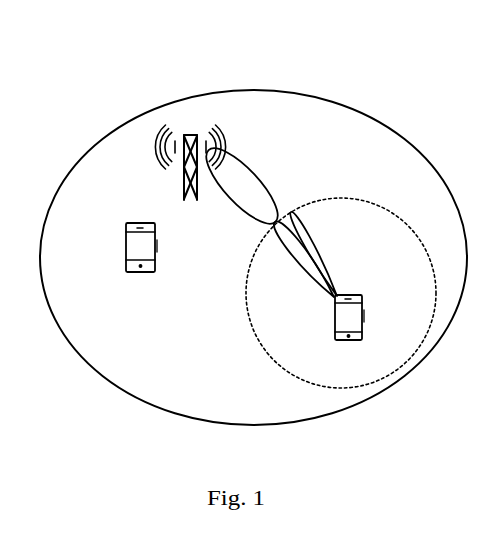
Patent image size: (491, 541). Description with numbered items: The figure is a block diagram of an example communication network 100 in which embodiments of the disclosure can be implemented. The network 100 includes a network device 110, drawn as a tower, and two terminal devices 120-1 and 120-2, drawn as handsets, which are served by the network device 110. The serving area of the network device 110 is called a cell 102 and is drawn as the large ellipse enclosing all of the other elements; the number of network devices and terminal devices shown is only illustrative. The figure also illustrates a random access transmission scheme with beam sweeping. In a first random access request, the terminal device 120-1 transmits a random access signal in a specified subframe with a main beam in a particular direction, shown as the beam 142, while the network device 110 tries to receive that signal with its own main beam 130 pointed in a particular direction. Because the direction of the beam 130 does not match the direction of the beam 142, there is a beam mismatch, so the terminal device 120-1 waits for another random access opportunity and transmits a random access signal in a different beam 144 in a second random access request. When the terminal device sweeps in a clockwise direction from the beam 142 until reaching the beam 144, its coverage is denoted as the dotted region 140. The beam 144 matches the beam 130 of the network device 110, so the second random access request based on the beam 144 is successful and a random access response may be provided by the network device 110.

The communication network 100 is at (214, 57).
The cell 102 is at (94, 146).
The network device 110 is at (190, 133).
The terminal device 120-1 is at (348, 294).
The terminal device 120-2 is at (140, 224).
The main beam 130 is at (232, 203).
The coverage 140 is at (350, 199).
The beam 142 is at (301, 207).
The beam 144 is at (300, 269).